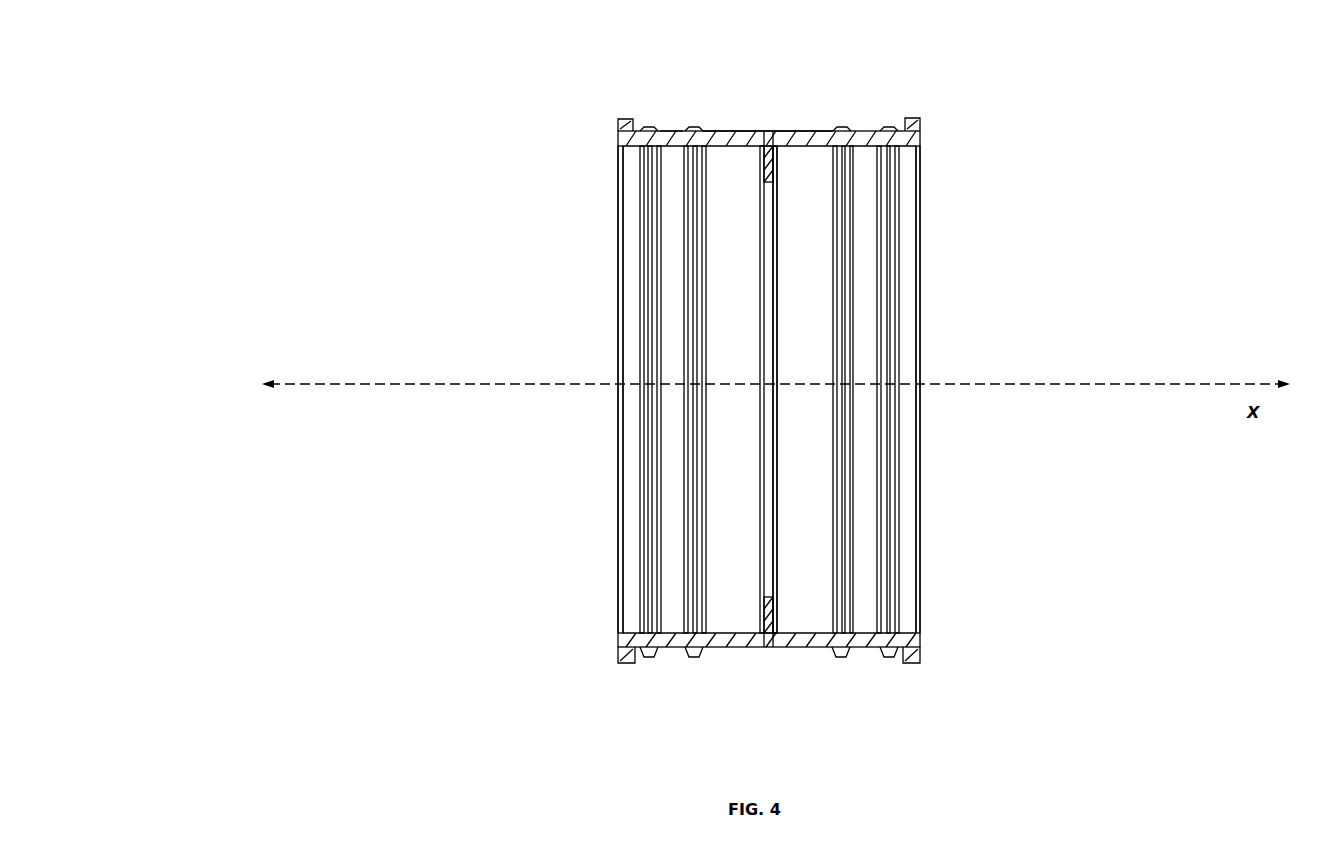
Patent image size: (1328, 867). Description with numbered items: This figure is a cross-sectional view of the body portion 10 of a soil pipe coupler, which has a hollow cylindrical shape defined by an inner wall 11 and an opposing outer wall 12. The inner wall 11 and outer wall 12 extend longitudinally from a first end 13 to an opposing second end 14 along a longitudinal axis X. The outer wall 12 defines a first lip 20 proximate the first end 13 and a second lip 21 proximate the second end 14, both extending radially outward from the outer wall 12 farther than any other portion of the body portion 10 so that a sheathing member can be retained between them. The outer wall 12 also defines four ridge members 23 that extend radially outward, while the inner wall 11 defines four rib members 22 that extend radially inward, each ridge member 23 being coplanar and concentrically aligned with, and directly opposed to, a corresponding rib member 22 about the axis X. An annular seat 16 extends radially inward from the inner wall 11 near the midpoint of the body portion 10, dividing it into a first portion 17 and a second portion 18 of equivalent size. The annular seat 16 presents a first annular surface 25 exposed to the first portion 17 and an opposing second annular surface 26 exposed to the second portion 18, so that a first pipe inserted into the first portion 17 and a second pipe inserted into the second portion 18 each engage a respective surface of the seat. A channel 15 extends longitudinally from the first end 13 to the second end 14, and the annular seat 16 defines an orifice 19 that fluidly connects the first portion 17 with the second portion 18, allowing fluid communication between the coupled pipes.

The body portion 10 is at (532, 92).
The inner wall 11 is at (723, 130).
The outer wall 12 is at (808, 127).
The first end 13 is at (603, 362).
The second end 14 is at (925, 367).
The channel 15 is at (815, 282).
The annular seat 16 is at (772, 130).
The first portion 17 is at (720, 413).
The second portion 18 is at (808, 413).
The orifice 19 is at (768, 353).
The first lip 20 is at (625, 117).
The second lip 21 is at (912, 115).
The rib member 22 is at (638, 476).
The ridge member 23 is at (648, 657).
The first annular surface 25 is at (755, 165).
The second annular surface 26 is at (781, 165).